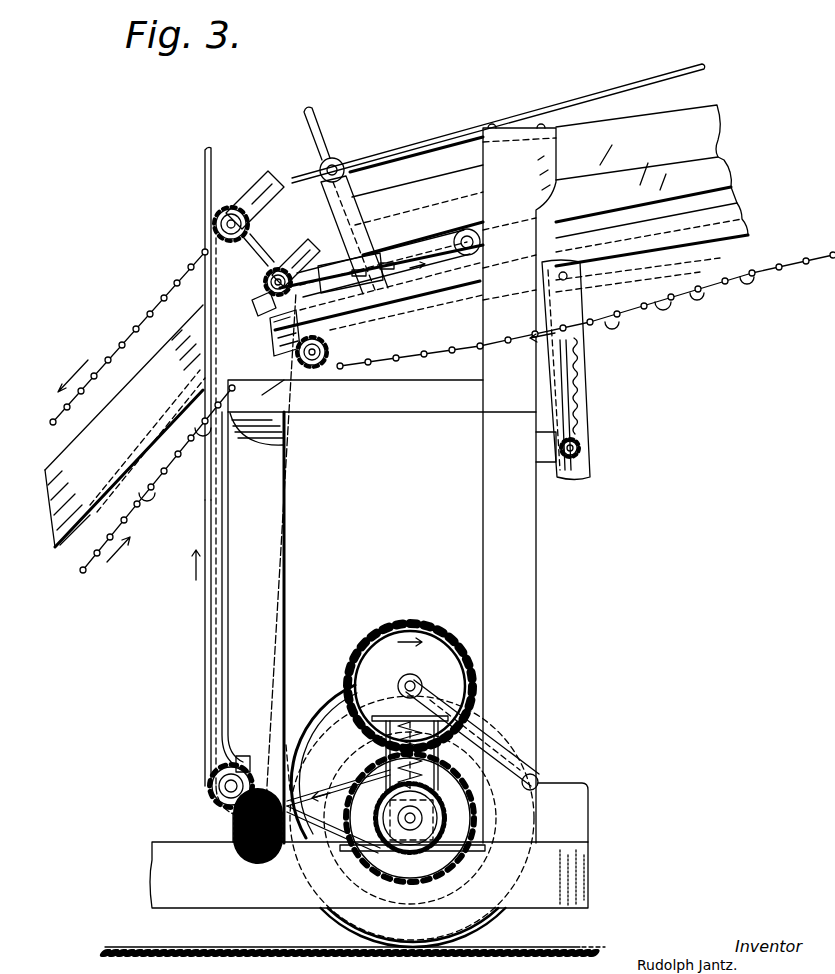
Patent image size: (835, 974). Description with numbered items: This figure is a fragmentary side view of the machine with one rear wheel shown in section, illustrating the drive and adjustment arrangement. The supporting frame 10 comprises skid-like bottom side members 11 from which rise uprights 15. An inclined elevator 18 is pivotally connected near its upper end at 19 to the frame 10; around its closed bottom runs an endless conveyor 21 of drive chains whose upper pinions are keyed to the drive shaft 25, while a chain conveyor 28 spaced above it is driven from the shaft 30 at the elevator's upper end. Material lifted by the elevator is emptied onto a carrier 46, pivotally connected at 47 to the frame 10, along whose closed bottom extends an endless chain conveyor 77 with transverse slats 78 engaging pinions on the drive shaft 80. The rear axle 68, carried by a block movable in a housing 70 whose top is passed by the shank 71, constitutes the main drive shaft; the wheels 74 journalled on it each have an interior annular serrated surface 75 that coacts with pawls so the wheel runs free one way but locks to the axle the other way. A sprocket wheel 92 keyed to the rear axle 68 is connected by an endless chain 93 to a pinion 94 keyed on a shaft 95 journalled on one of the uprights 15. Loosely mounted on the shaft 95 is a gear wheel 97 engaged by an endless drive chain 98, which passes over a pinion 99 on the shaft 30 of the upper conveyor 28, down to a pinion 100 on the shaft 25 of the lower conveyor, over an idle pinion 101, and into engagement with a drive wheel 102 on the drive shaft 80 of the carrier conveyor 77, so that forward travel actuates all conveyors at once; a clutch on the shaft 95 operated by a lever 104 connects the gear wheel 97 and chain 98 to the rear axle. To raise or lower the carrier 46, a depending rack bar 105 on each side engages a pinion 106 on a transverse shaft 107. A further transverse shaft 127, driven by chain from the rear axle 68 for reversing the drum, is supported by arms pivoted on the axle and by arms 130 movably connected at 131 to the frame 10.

The supporting frame 10 is at (433, 398).
The bottom side members 11 is at (578, 862).
The uprights 15 is at (515, 522).
The inclined elevator 18 is at (78, 485).
The pivotal connection of elevator 19 is at (255, 455).
The endless conveyor 21 is at (73, 580).
The drive shaft 25 is at (268, 294).
The chain conveyor 28 is at (128, 332).
The shaft 30 is at (250, 222).
The carrier 46 is at (733, 239).
The pivotal connection of carrier 47 is at (290, 395).
The rear axle 68 is at (367, 842).
The housing 70 is at (440, 747).
The shank 71 is at (324, 761).
The wheels 74 is at (333, 920).
The annular serrated surface 75 is at (387, 848).
The endless chain conveyor 77 is at (712, 287).
The transverse slats 78 is at (690, 305).
The drive shaft 80 is at (322, 368).
The sprocket wheel 92 is at (340, 832).
The endless chain 93 is at (293, 748).
The pinion 94 is at (245, 808).
The shaft 95 is at (210, 786).
The gear wheel 97 is at (236, 762).
The endless drive chain 98 is at (204, 683).
The pinion 99 is at (231, 206).
The pinion 100 is at (265, 262).
The idle pinion 101 is at (478, 283).
The drive wheel 102 is at (345, 362).
The lever 104 is at (205, 203).
The rack bar 105 is at (587, 372).
The pinion 106 is at (580, 440).
The transverse shaft 107 is at (588, 449).
The transverse shaft 127 is at (425, 686).
The arms 130 is at (480, 717).
The movable connection of arms 131 is at (542, 780).